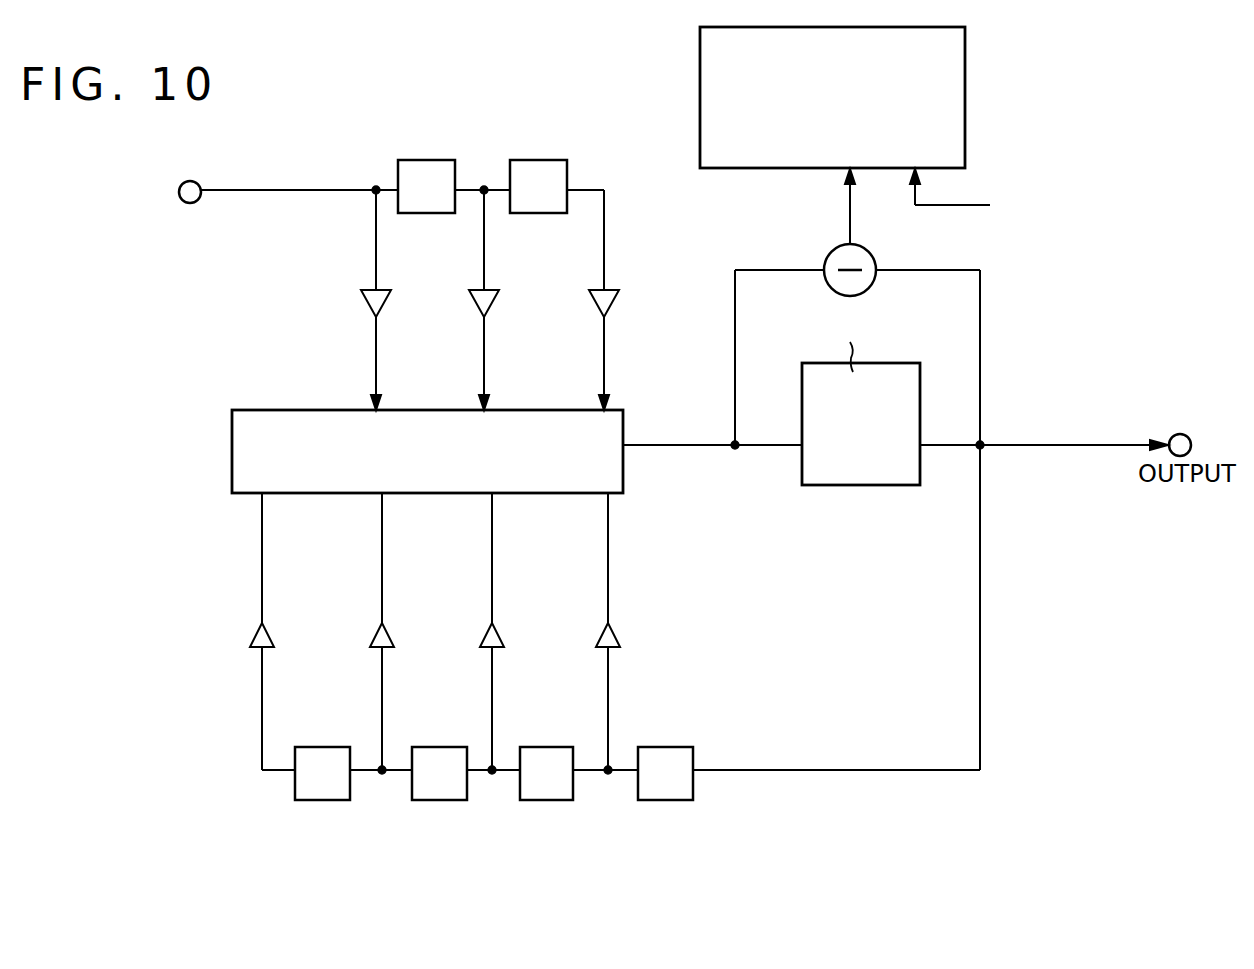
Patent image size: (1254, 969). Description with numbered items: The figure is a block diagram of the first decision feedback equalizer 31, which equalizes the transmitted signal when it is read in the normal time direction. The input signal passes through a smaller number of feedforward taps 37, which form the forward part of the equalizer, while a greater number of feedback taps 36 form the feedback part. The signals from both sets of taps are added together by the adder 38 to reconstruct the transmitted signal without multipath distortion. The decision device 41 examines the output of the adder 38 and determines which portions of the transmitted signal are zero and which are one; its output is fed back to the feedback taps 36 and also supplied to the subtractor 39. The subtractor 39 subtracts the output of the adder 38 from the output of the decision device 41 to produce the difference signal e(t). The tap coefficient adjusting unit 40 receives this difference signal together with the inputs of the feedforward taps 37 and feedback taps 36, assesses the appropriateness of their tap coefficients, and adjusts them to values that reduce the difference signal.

The first decision feedback equalizer 31 is at (345, 108).
The feedback taps 36 is at (677, 826).
The feedforward taps 37 is at (553, 139).
The adder 38 is at (297, 411).
The subtractor 39 is at (876, 254).
The tap coefficient adjusting unit 40 is at (965, 63).
The decision device 41 is at (873, 487).